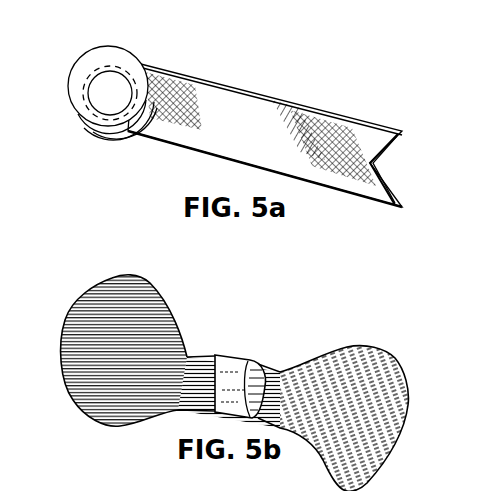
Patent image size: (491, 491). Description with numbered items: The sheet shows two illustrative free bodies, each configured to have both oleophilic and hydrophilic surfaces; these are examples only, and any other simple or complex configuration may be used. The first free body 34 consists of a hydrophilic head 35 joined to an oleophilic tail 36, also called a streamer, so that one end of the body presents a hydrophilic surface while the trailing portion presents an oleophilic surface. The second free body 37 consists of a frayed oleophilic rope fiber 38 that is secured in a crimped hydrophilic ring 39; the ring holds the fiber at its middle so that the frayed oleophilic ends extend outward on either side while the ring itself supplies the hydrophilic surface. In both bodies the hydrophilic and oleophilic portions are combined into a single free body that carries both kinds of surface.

In FIG. 5a, the free body 34 is at (227, 85).
In FIG. 5a, the hydrophilic head 35 is at (98, 53).
In FIG. 5a, the oleophilic tail 36 is at (286, 116).
In FIG. 5b, the free body 37 is at (281, 373).
In FIG. 5b, the frayed oleophilic rope fiber 38 is at (202, 350).
In FIG. 5b, the crimped hydrophilic ring 39 is at (244, 356).